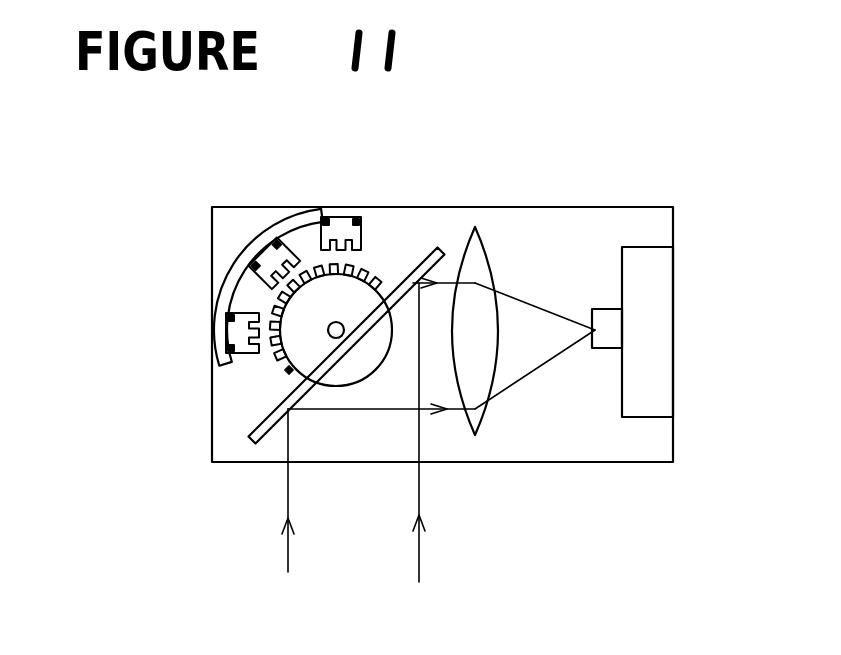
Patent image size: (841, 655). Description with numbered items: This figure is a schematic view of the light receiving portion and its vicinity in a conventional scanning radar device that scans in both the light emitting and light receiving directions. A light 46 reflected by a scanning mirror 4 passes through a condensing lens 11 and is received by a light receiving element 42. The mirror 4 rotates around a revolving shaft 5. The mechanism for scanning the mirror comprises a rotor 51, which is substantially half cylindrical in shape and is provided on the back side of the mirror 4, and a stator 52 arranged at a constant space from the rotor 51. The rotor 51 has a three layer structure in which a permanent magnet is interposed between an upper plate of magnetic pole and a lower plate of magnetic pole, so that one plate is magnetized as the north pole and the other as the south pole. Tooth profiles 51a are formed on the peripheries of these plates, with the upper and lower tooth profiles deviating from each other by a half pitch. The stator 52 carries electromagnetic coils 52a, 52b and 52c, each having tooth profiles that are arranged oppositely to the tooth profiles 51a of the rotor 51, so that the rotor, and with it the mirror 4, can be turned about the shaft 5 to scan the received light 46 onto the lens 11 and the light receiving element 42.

The scanning mirror 4 is at (253, 437).
The revolving shaft 5 is at (336, 338).
The condensing lens 11 is at (487, 250).
The light receiving element 42 is at (605, 318).
The light 46 is at (420, 542).
The rotor 51 is at (310, 363).
The tooth profiles 51a is at (268, 295).
The stator 52 is at (243, 258).
The electromagnetic coil 52a is at (227, 332).
The electromagnetic coil 52b is at (265, 238).
The electromagnetic coil 52c is at (340, 222).